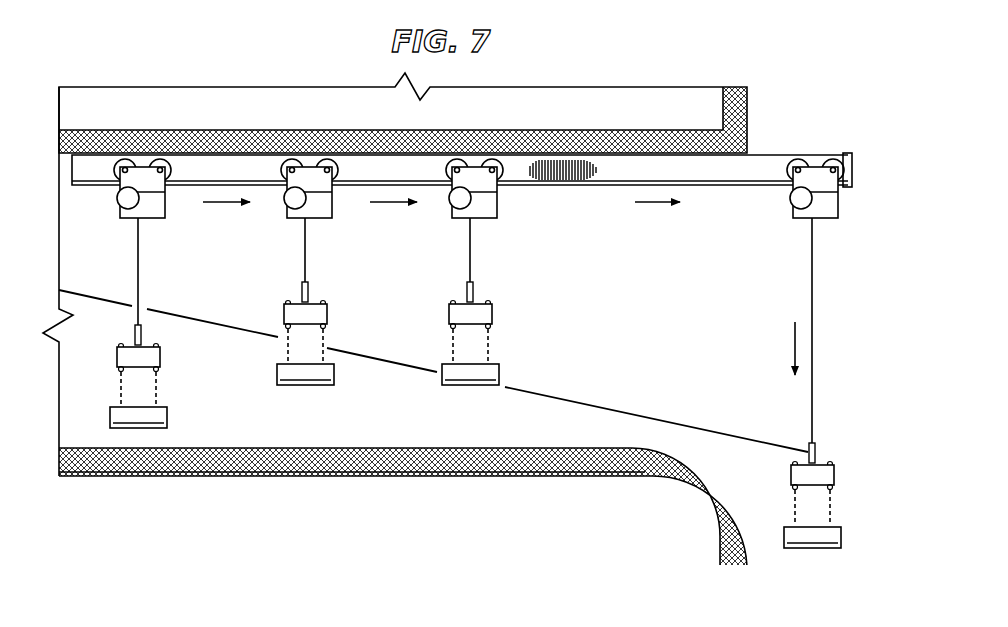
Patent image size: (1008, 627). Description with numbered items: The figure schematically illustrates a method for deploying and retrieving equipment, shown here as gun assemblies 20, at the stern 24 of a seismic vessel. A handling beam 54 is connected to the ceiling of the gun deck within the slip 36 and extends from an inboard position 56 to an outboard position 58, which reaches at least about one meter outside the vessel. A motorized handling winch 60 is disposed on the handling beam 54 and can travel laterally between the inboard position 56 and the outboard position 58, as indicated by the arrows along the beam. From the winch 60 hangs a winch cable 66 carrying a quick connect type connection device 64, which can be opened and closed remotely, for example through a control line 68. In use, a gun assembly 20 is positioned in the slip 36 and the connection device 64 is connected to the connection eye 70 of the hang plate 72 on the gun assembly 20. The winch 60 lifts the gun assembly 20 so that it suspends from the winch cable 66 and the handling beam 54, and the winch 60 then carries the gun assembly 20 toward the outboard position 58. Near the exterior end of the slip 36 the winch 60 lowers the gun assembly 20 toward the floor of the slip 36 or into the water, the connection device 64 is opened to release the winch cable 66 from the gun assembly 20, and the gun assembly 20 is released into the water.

The gun assembly 20 is at (167, 415).
The stern 24 is at (708, 522).
The slip 36 is at (630, 315).
The handling beam 54 is at (563, 172).
The inboard position 56 is at (83, 172).
The outboard position 58 is at (838, 153).
The handling winch 60 is at (180, 222).
The quick connect type connection device 64 is at (144, 330).
The winch cable 66 is at (140, 262).
The control line 68 is at (618, 408).
The connection eye 70 is at (134, 346).
The hang plate 72 is at (160, 357).